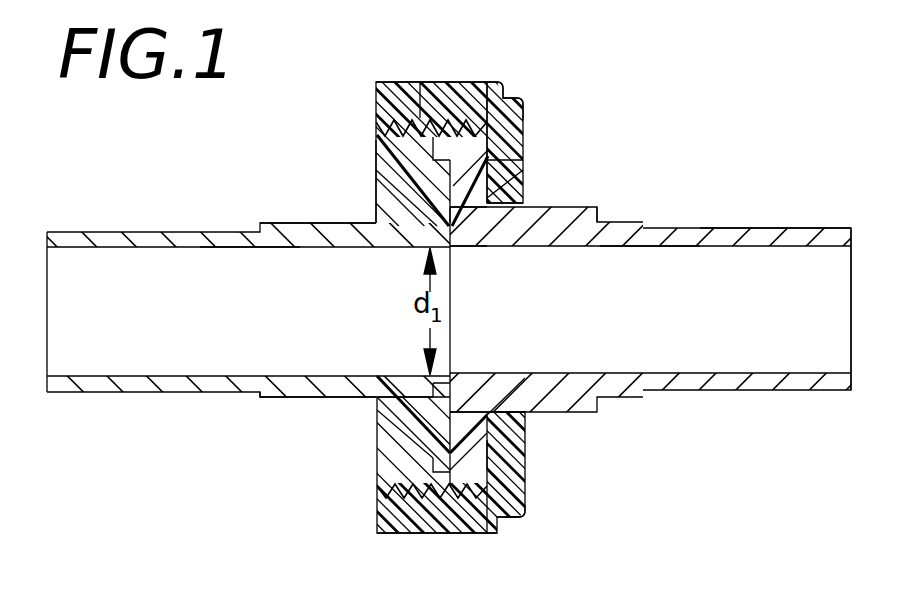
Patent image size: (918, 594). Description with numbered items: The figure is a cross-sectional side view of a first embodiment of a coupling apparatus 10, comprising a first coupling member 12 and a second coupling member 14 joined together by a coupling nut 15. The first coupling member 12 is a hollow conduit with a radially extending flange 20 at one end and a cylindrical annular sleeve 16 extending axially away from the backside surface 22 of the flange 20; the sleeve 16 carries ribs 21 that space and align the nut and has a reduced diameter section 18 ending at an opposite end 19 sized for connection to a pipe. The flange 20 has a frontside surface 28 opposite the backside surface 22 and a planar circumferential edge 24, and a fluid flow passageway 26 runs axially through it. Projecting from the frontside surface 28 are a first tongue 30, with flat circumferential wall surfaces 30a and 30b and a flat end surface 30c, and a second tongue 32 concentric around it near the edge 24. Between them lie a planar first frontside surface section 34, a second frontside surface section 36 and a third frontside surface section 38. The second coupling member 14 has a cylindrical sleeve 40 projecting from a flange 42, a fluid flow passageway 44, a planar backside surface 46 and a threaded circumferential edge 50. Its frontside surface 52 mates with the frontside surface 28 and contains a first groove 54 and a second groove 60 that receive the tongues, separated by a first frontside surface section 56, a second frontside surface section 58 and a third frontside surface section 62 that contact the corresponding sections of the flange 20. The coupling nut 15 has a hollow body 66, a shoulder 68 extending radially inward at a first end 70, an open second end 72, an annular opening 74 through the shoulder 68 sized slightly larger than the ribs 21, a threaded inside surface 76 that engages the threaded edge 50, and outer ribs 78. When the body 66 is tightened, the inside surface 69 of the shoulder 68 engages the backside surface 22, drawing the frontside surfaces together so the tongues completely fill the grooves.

The coupling apparatus 10 is at (318, 143).
The first coupling member 12 is at (600, 216).
The second coupling member 14 is at (251, 209).
The coupling nut 15 is at (359, 65).
The cylindrical annular sleeve 16 is at (622, 229).
The reduced diameter section 18 is at (770, 228).
The opposite end 19 is at (853, 230).
The flange 20 is at (500, 160).
The ribs 21 is at (615, 191).
The backside surface 22 is at (520, 465).
The circumferential edge 24 is at (472, 520).
The fluid flow passageway 26 is at (645, 248).
The frontside surface 28 is at (420, 196).
The first tongue 30 is at (425, 247).
The flat circumferential wall surface 30a is at (377, 410).
The flat circumferential wall surface 30b is at (450, 245).
The flat end surface 30c is at (348, 247).
The second tongue 32 is at (418, 84).
The first frontside surface section 34 is at (433, 383).
The second frontside surface section 36 is at (440, 457).
The third frontside surface section 38 is at (405, 458).
The cylindrical sleeve 40 is at (280, 397).
The flange 42 is at (402, 484).
The fluid flow passageway 44 is at (258, 248).
The backside surface 46 is at (376, 206).
The circumferential edge 50 is at (378, 533).
The frontside surface 52 is at (482, 198).
The first groove 54 is at (460, 398).
The first frontside surface section 56 is at (468, 247).
The second frontside surface section 58 is at (530, 430).
The second groove 60 is at (508, 520).
The third frontside surface section 62 is at (485, 88).
The hollow body 66 is at (445, 522).
The shoulder 68 is at (505, 500).
The inside surface 69 is at (520, 456).
The first end 70 is at (524, 113).
The open second end 72 is at (376, 110).
The annular opening 74 is at (570, 382).
The inside surface 76 is at (420, 190).
The ribs 78 is at (444, 92).